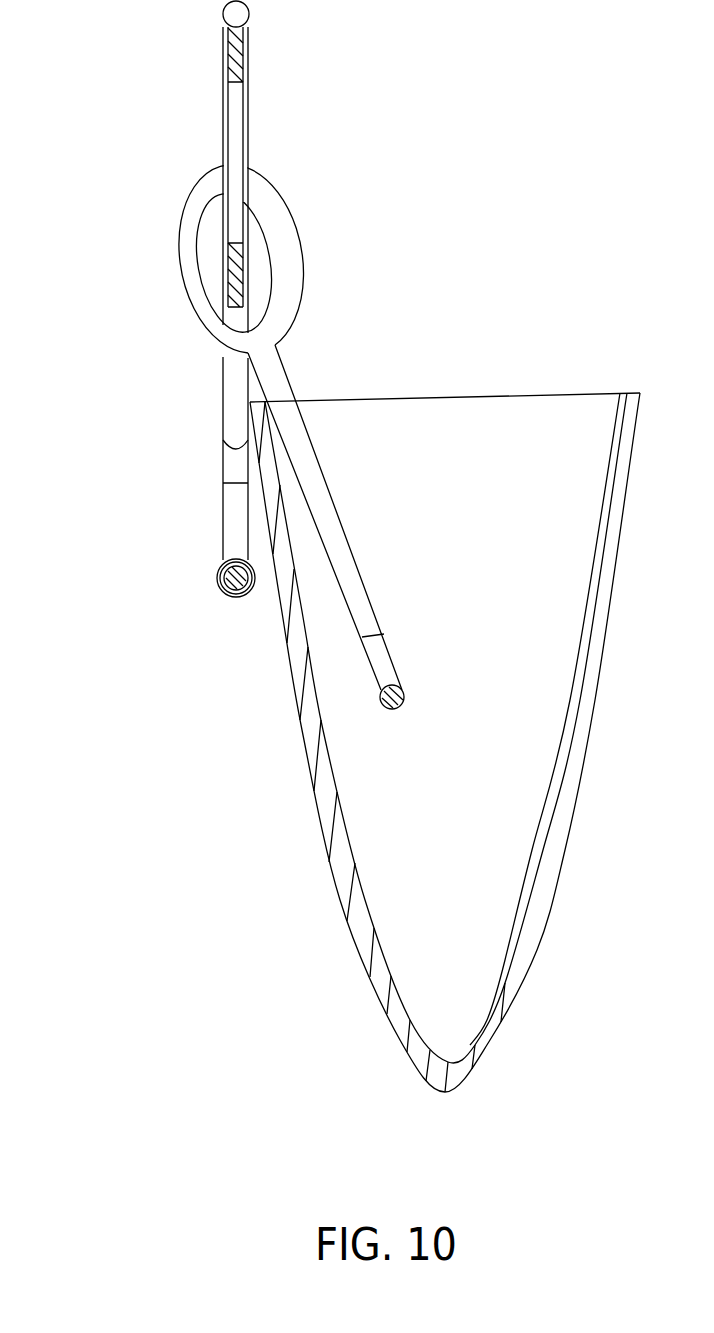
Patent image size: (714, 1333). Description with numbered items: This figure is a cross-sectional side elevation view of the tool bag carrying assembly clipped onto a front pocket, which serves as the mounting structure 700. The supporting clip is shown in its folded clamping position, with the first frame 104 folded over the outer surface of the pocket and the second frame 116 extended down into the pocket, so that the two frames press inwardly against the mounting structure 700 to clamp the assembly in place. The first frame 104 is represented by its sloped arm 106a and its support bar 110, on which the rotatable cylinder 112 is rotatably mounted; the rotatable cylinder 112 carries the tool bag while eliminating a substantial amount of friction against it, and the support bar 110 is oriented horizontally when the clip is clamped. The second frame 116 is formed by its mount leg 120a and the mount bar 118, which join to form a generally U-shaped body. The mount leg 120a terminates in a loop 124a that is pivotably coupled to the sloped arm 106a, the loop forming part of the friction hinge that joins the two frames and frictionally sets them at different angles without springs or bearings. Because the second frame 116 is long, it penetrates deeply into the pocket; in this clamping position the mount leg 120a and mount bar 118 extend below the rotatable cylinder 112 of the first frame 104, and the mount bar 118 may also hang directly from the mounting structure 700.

The loop 124a is at (178, 262).
The sloped arm 106a is at (223, 503).
The first frame 104 is at (212, 535).
The rotatable cylinder 112 is at (219, 577).
The support bar 110 is at (232, 593).
The mounting structure 700 is at (310, 728).
The second frame 116 is at (312, 420).
The mount leg 120a is at (343, 535).
The mount bar 118 is at (404, 692).